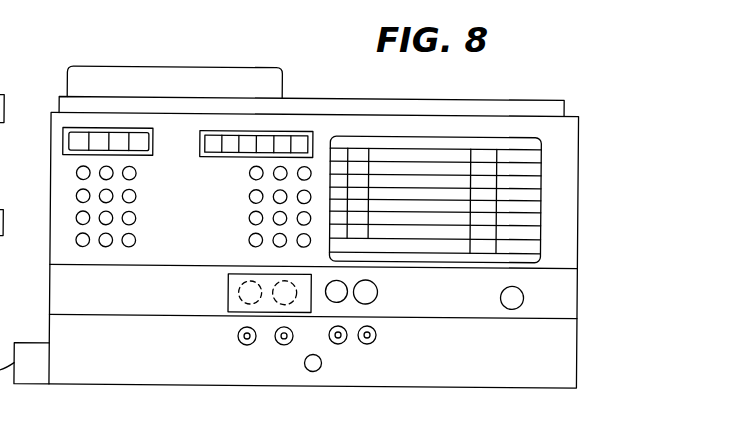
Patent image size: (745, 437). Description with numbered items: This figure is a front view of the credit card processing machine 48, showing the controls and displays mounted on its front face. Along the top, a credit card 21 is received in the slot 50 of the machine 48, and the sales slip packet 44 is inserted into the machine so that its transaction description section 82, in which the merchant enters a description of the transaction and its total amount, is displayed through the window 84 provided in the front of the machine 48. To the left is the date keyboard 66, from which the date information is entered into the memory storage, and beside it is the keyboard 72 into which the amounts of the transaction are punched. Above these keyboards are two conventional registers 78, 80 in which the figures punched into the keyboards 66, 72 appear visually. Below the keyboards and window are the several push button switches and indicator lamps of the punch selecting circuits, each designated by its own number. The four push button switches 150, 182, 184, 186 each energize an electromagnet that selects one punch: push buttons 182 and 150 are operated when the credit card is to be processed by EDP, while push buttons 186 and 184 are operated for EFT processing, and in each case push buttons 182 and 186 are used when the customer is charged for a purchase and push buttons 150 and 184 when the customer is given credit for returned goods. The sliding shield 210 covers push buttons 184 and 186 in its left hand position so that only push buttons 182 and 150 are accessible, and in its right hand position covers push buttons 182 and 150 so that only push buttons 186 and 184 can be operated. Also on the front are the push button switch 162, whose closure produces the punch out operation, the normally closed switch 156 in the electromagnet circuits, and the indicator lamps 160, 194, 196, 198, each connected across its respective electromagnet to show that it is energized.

The credit card 21 is at (268, 88).
The sales slip packet 44 is at (418, 99).
The machine 48 is at (578, 187).
The slot 50 is at (10, 150).
The date keyboard 66 is at (64, 228).
The keyboard 72 is at (241, 201).
The register 78 is at (152, 148).
The register 80 is at (206, 157).
The transaction description section 82 is at (440, 194).
The window 84 is at (548, 146).
The push button switch 150 is at (371, 299).
The switch 156 is at (307, 368).
The lamp 160 is at (375, 341).
The push button switch 162 is at (501, 299).
The push button switch 182 is at (345, 280).
The push button switch 184 is at (273, 274).
The push button switch 186 is at (242, 276).
The indicator lamp 194 is at (339, 344).
The indicator lamp 196 is at (279, 343).
The indicator lamp 198 is at (240, 342).
The sliding shield 210 is at (228, 305).